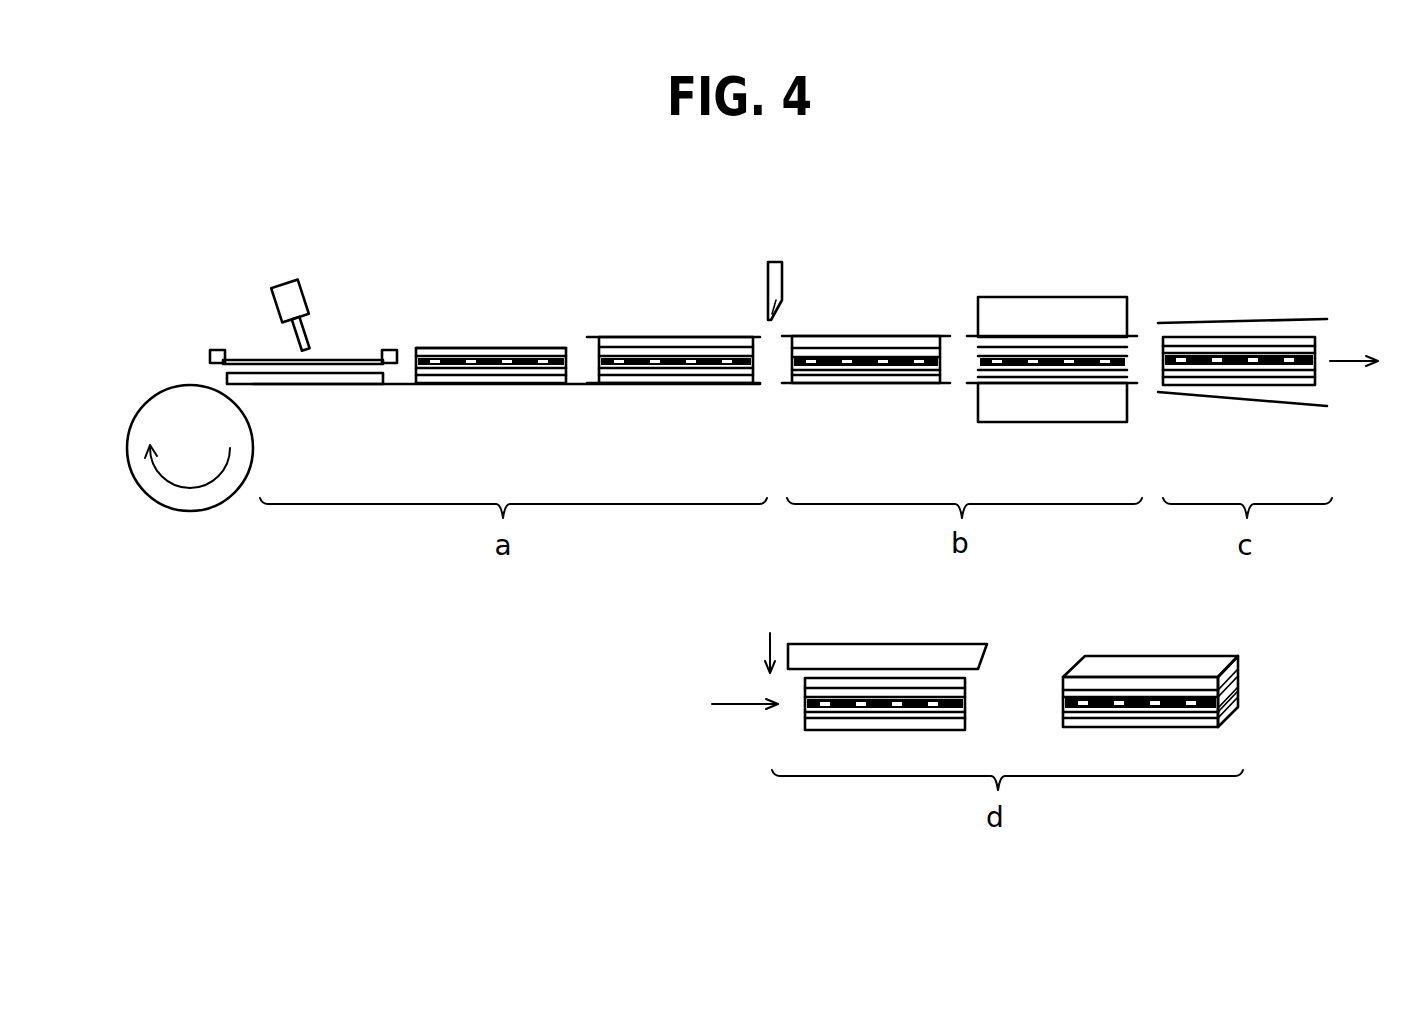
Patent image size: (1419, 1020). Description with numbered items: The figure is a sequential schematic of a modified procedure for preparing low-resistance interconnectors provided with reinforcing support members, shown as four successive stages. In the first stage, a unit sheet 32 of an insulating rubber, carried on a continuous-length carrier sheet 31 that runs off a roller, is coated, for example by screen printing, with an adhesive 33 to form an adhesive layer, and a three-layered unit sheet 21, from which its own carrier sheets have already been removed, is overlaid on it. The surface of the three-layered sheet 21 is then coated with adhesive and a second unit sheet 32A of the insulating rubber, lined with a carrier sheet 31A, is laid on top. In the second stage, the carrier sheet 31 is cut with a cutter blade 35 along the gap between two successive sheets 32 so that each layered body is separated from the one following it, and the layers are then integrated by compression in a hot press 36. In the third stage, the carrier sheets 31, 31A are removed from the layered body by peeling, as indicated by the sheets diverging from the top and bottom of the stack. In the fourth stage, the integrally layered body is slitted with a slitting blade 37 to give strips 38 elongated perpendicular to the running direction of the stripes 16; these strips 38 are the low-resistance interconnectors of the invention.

The stripes 16 is at (478, 383).
The three-layered unit sheet 21 is at (478, 350).
The carrier sheet 31 is at (400, 387).
The carrier sheet 31A is at (597, 335).
The unit sheet 32 is at (317, 373).
The second unit sheet 32A is at (682, 347).
The adhesive 33 is at (285, 293).
The cutter blade 35 is at (783, 288).
The hot press 36 is at (1048, 297).
The slitting blade 37 is at (827, 643).
The strips 38 is at (1156, 640).